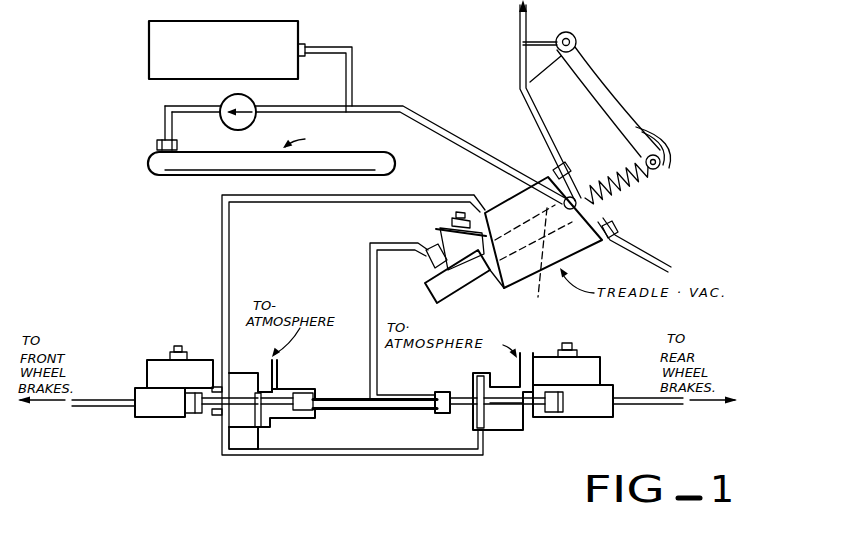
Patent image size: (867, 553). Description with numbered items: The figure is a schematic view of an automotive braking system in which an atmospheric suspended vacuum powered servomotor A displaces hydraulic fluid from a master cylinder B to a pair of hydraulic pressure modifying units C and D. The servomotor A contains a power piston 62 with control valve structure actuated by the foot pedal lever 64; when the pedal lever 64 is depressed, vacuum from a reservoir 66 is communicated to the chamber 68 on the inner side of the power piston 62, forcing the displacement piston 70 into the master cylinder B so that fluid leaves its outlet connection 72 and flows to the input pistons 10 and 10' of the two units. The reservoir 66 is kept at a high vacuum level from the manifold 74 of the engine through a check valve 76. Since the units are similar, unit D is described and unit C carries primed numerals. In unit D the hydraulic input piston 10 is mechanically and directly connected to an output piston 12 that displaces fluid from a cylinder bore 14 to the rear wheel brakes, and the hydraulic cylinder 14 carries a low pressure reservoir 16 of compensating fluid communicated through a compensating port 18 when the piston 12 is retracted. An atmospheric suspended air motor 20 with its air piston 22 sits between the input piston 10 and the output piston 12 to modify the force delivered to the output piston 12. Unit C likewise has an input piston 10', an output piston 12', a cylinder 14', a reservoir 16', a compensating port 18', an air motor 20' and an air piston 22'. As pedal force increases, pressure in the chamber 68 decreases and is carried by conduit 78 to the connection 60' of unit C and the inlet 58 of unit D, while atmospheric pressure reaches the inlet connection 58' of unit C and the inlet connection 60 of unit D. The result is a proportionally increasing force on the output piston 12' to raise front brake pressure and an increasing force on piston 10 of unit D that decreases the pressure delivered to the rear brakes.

The hydraulic input piston 10 is at (468, 395).
The hydraulic input piston 10' is at (281, 411).
The output piston 12 is at (565, 423).
The output piston 12' is at (210, 418).
The hydraulic cylinder 14 is at (576, 419).
The hydraulic cylinder 14' is at (137, 416).
The low pressure reservoir 16 is at (582, 364).
The low pressure reservoir 16' is at (159, 365).
The compensating port 18 is at (602, 409).
The compensating port 18' is at (201, 375).
The atmospheric suspended air motor 20 is at (516, 435).
The atmospheric suspended air motor 20' is at (263, 451).
The air piston 22 is at (492, 398).
The air piston 22' is at (285, 399).
The inlet 58 is at (448, 456).
The inlet connection 58' is at (295, 372).
The inlet connection 60 is at (544, 336).
The connection 60' is at (249, 353).
The power piston 62 is at (612, 227).
The foot pedal lever 64 is at (655, 143).
The reservoir 66 is at (298, 31).
The chamber 68 is at (562, 250).
The displacement piston 70 is at (534, 265).
The outlet connection 72 is at (368, 258).
The manifold 74 is at (212, 163).
The check valve 76 is at (256, 104).
The conduit 78 is at (228, 263).
The atmospheric suspended vacuum powered servomotor A is at (510, 192).
The master cylinder B is at (467, 295).
The hydraulic pressure modifying unit C is at (156, 350).
The hydraulic pressure modifying unit D is at (592, 351).